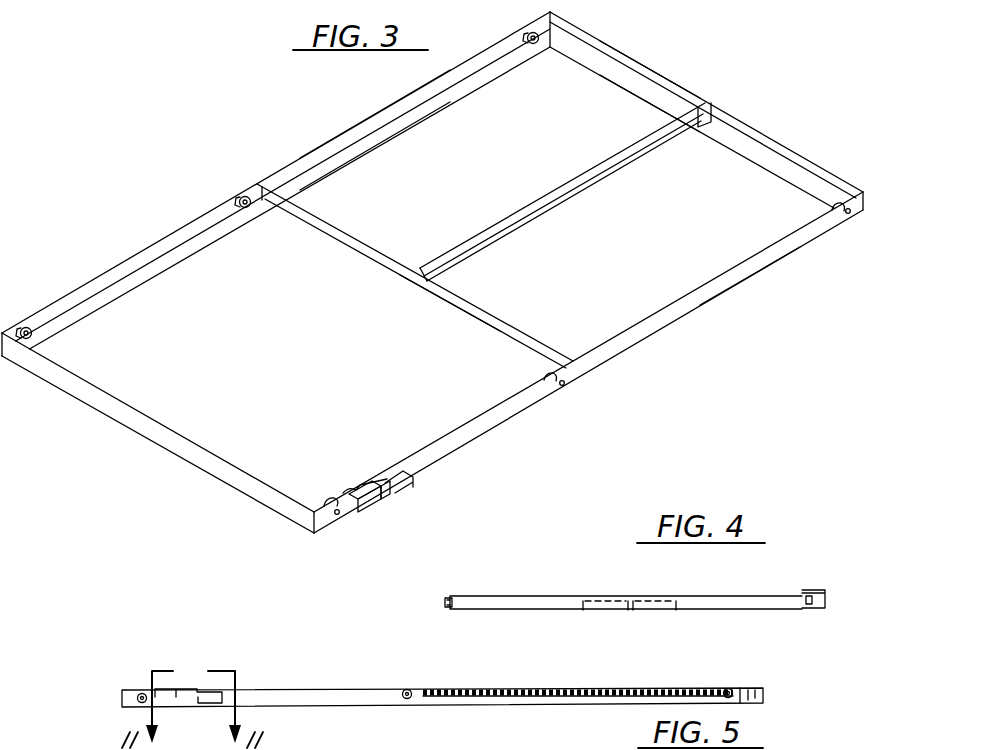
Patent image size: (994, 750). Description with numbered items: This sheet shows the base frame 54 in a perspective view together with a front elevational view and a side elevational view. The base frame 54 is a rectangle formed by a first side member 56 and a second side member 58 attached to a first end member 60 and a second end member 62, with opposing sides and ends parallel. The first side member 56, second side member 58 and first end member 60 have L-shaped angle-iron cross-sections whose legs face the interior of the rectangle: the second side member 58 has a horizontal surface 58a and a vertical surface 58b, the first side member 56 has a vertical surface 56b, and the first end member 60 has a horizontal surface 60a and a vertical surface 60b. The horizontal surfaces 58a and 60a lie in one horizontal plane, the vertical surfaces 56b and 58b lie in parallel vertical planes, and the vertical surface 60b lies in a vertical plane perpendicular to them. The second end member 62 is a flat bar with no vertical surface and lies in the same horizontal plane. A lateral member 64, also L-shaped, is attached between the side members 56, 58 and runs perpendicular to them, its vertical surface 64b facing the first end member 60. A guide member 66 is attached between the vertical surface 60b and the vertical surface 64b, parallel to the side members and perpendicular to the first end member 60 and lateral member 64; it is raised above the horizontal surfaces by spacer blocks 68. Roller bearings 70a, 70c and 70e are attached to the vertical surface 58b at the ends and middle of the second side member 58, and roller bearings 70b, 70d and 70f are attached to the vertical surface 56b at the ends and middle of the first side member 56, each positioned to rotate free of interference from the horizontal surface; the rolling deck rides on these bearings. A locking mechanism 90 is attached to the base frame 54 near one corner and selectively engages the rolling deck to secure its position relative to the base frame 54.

In FIG. 3, the base frame 54 is at (208, 120).
In FIG. 4, the base frame 54 is at (690, 585).
In FIG. 5, the base frame 54 is at (111, 692).
In FIG. 3, the first side member 56 is at (485, 445).
In FIG. 5, the first side member 56 is at (287, 706).
In FIG. 3, the vertical surface 56b is at (775, 262).
In FIG. 3, the second side member 58 is at (337, 125).
In FIG. 3, the horizontal surface 58a is at (353, 164).
In FIG. 3, the vertical surface 58b is at (430, 84).
In FIG. 3, the first end member 60 is at (712, 88).
In FIG. 3, the horizontal surface 60a is at (578, 63).
In FIG. 3, the vertical surface 60b is at (652, 70).
In FIG. 3, the second end member 62 is at (137, 433).
In FIG. 3, the lateral member 64 is at (371, 267).
In FIG. 3, the vertical surface 64b is at (478, 320).
In FIG. 3, the guide member 66 is at (532, 203).
In FIG. 3, the spacer blocks 68 is at (702, 125).
In FIG. 3, the roller bearing 70a is at (30, 322).
In FIG. 4, the roller bearing 70a is at (448, 613).
In FIG. 3, the roller bearing 70b is at (333, 490).
In FIG. 4, the roller bearing 70b is at (803, 610).
In FIG. 3, the roller bearing 70c is at (249, 195).
In FIG. 5, the roller bearing 70c is at (420, 704).
In FIG. 3, the roller bearing 70d is at (548, 373).
In FIG. 3, the roller bearing 70e is at (542, 33).
In FIG. 3, the roller bearing 70f is at (840, 200).
In FIG. 3, the locking mechanism 90 is at (364, 521).
In FIG. 4, the locking mechanism 90 is at (836, 585).
In FIG. 5, the locking mechanism 90 is at (182, 660).